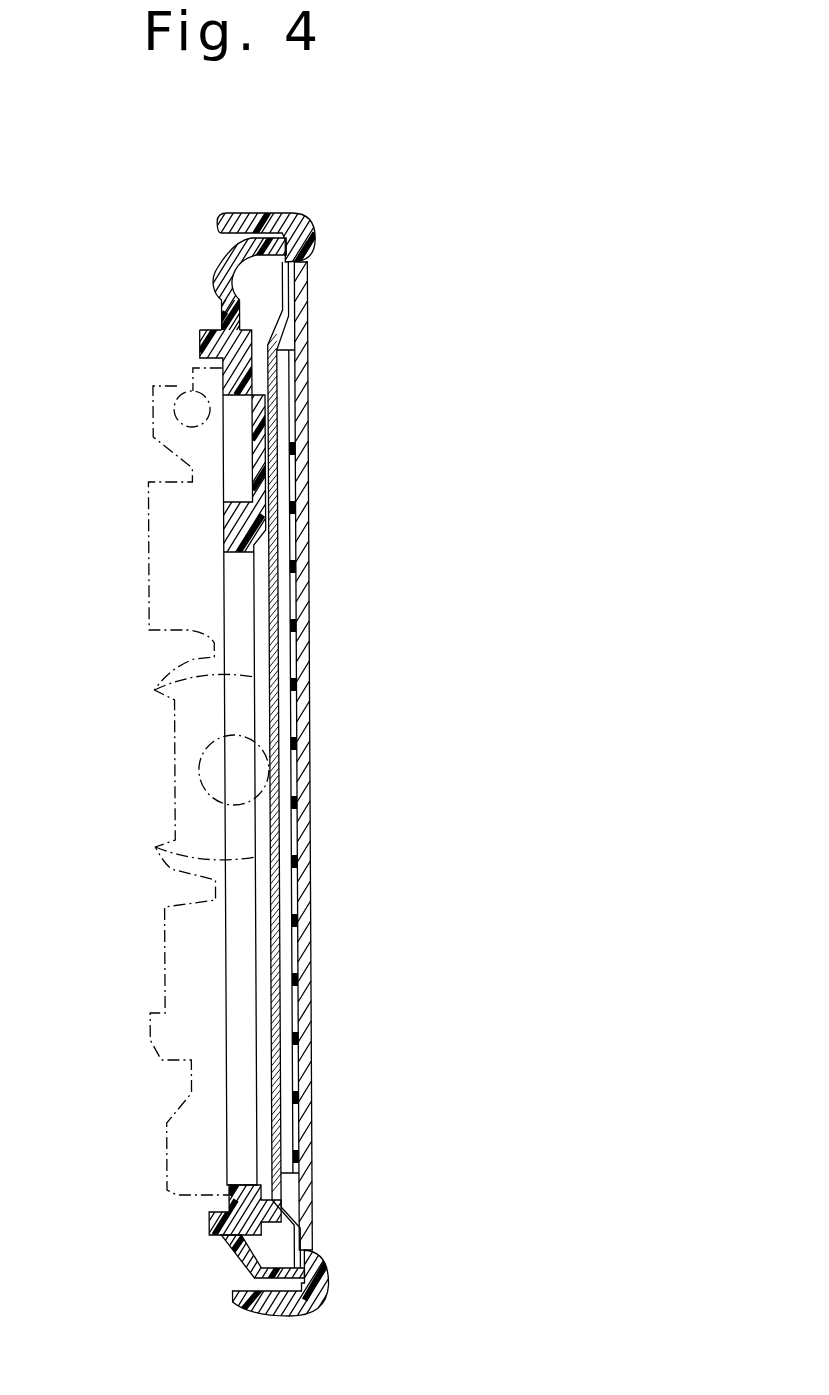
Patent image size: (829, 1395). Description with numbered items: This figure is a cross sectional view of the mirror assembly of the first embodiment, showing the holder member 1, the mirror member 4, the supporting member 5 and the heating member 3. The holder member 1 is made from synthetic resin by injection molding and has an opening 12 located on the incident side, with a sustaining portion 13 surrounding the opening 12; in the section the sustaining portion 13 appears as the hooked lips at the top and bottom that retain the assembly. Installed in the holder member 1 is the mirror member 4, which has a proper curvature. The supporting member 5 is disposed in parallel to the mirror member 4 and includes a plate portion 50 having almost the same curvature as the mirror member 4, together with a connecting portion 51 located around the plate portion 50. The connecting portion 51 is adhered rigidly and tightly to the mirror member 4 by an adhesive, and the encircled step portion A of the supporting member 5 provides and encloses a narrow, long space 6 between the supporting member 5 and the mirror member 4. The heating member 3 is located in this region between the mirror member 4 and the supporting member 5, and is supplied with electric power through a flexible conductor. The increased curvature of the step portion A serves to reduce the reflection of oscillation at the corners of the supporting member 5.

The holder member 1 is at (218, 211).
The sustaining portion 13 is at (312, 236).
The connecting portion 51 is at (280, 283).
The step portion A is at (232, 298).
The space 6 is at (286, 336).
The mirror member 4 is at (306, 452).
The supporting member 5 is at (283, 552).
The heating member 3 is at (308, 743).
The plate portion 50 is at (272, 925).
The opening 12 is at (316, 1260).